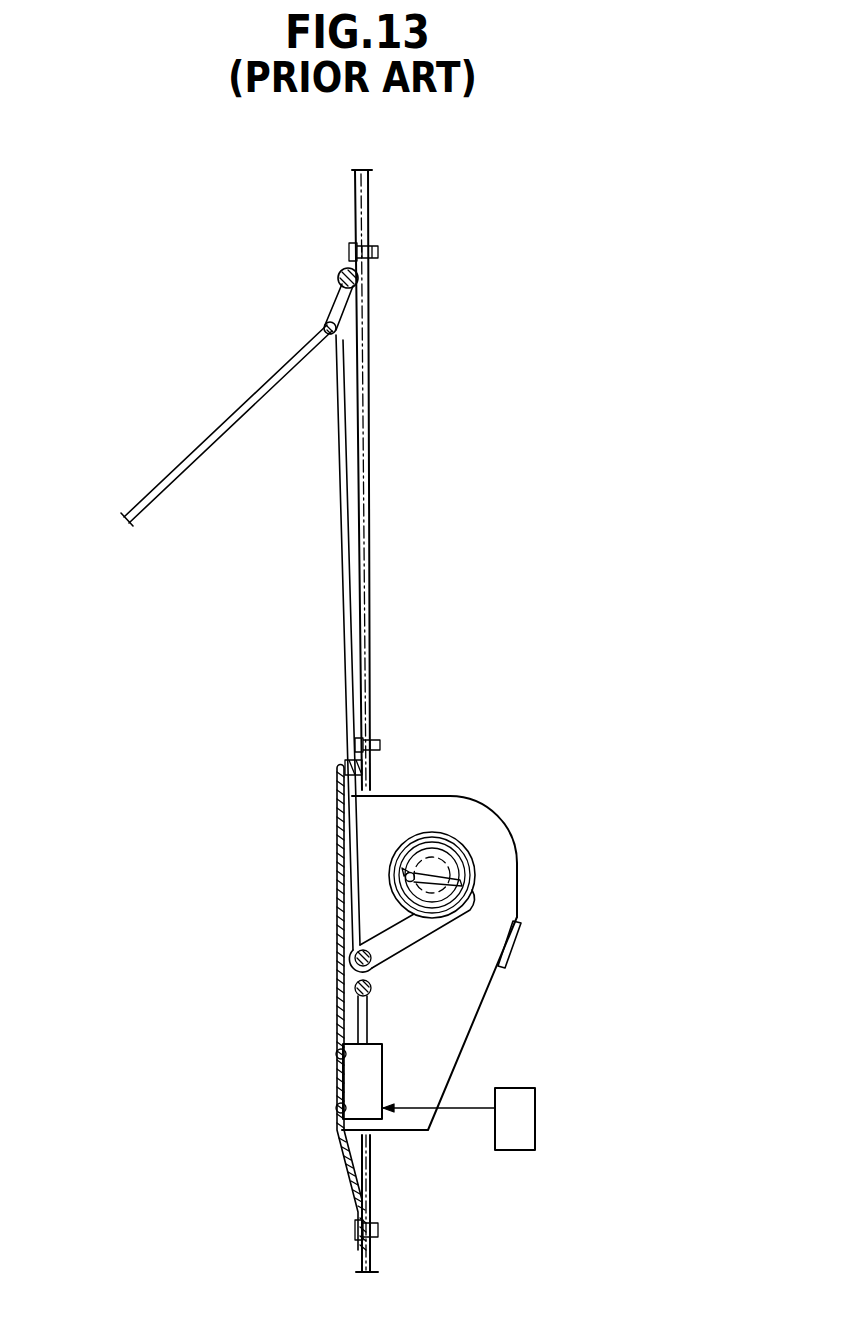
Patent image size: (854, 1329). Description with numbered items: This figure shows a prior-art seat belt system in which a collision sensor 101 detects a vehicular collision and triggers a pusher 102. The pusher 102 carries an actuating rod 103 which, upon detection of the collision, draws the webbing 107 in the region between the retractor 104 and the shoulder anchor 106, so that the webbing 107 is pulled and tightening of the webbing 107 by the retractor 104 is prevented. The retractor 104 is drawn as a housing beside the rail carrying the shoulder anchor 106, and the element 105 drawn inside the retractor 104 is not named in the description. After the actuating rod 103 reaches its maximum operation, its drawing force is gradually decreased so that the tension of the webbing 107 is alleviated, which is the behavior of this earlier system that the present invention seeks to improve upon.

The collision sensor 101 is at (508, 1098).
The pusher 102 is at (357, 1083).
The actuating rod 103 is at (363, 1022).
The retractor 104 is at (487, 828).
The spiral spring 105 is at (455, 903).
The shoulder anchor 106 is at (318, 302).
The webbing 107 is at (210, 443).